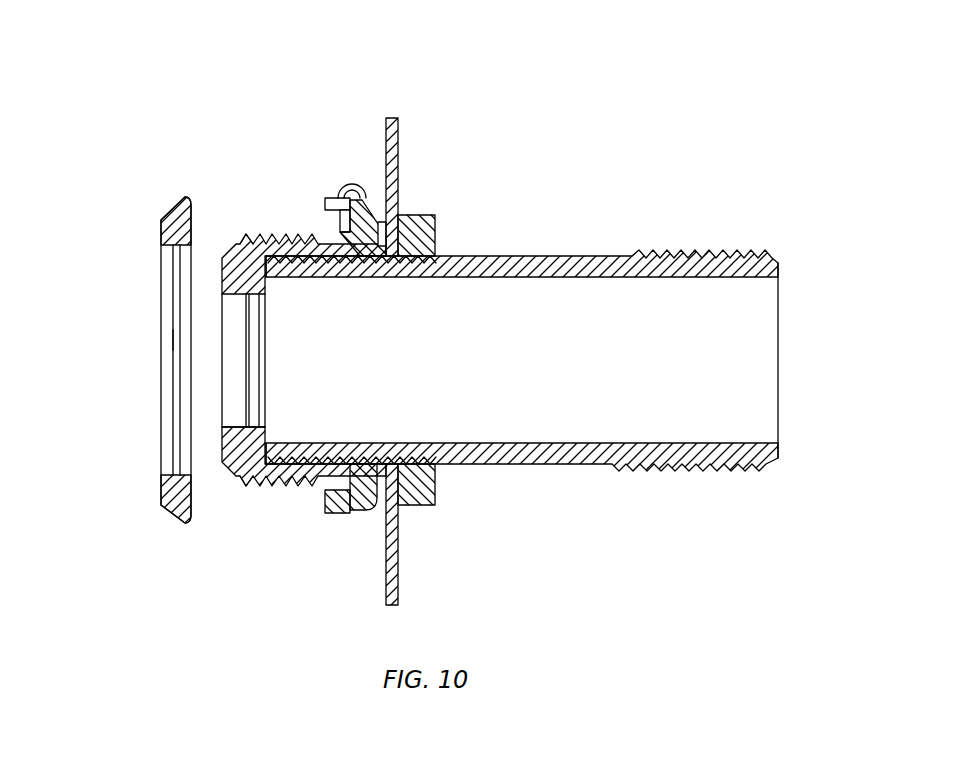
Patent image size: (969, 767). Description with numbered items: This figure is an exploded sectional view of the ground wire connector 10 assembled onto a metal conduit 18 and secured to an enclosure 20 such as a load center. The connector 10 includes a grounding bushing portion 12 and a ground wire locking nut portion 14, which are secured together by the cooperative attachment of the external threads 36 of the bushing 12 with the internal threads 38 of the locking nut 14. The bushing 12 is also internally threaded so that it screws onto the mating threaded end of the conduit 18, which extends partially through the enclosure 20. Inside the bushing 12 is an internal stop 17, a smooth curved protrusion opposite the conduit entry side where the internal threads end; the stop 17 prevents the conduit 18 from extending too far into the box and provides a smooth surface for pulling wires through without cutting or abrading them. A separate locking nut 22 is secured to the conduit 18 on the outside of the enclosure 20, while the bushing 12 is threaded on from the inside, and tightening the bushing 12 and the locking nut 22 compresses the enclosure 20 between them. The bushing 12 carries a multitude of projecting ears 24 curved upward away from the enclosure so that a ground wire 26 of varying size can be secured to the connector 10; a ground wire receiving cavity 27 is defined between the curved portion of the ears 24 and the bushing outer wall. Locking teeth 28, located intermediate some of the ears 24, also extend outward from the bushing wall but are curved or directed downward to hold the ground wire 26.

The ground wire connector 10 is at (472, 89).
The grounding bushing portion 12 is at (245, 246).
The ground wire locking nut portion 14 is at (183, 199).
The internal stop 17 is at (228, 440).
The metal conduit 18 is at (563, 256).
The electrical enclosure 20 is at (398, 128).
The separate locking nut 22 is at (440, 208).
The projecting ears 24 is at (357, 515).
The ground wire 26 is at (338, 178).
The ground wire receiving cavity 27 is at (336, 230).
The locking teeth 28 is at (378, 222).
The external threads 36 is at (258, 238).
The internal threads 38 is at (175, 343).